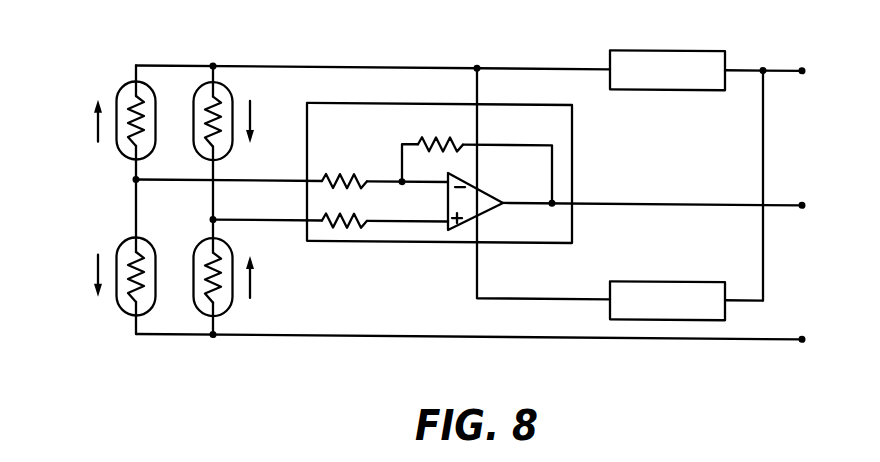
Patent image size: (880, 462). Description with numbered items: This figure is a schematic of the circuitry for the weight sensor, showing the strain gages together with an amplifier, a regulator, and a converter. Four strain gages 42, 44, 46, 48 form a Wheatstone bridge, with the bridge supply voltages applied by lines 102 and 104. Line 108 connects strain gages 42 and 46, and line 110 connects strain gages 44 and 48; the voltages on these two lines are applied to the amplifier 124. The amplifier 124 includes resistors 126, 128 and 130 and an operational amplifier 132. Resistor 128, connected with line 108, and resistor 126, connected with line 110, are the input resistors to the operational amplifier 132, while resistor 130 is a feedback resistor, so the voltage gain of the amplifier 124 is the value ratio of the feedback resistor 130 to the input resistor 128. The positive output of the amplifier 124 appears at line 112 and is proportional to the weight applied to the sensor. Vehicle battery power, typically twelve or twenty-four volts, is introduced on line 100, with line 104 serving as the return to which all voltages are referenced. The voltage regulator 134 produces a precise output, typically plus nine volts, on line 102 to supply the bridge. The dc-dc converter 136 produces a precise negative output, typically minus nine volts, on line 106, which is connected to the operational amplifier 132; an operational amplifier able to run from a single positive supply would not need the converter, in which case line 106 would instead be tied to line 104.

The strain gage 42 is at (118, 244).
The strain gage 44 is at (232, 92).
The strain gage 46 is at (118, 86).
The strain gage 48 is at (232, 303).
The line 100 is at (786, 66).
The line 102 is at (527, 66).
The line 104 is at (765, 333).
The line 106 is at (572, 295).
The line 108 is at (132, 179).
The line 110 is at (212, 219).
The line 112 is at (780, 200).
The amplifier 124 is at (325, 116).
The resistor 126 is at (356, 226).
The resistor 128 is at (370, 185).
The feedback resistor 130 is at (434, 140).
The operational amplifier 132 is at (480, 194).
The voltage regulator 134 is at (655, 86).
The dc-dc converter 136 is at (686, 278).